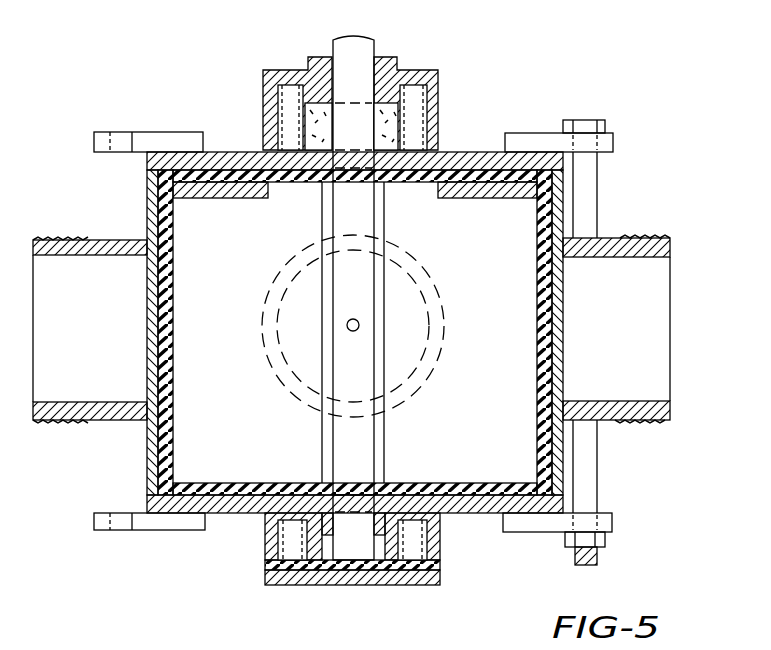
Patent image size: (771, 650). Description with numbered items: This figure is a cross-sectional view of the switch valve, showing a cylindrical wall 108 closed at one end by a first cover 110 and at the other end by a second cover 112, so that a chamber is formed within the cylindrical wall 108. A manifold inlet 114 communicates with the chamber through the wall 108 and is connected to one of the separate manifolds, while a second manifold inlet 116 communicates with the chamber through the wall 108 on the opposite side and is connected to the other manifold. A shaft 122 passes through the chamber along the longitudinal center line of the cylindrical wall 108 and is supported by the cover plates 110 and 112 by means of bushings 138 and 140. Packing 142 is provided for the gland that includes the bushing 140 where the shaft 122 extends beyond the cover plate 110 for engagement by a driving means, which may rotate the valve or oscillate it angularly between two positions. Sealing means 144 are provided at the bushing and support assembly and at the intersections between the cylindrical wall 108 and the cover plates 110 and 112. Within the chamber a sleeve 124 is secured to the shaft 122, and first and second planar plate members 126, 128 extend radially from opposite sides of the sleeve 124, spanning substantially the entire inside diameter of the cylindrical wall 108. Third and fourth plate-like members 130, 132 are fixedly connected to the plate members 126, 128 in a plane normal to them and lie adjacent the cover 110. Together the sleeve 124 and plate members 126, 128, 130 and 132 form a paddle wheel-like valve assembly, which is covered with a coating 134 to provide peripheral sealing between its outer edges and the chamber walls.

The cylindrical wall 108 is at (565, 205).
The first cover 110 is at (475, 152).
The second cover 112 is at (480, 513).
The manifold inlet 114 is at (665, 240).
The second manifold inlet 116 is at (90, 240).
The shaft 122 is at (355, 38).
The sleeve 124 is at (383, 297).
The first planar plate member 126 is at (495, 446).
The second planar plate member 128 is at (240, 369).
The third plate-like member 130 is at (452, 210).
The fourth plate-like member 132 is at (192, 210).
The coating 134 is at (173, 270).
The bushing 138 is at (390, 538).
The bushing 140 is at (400, 68).
The packing 142 is at (395, 122).
The sealing means 144 is at (555, 165).